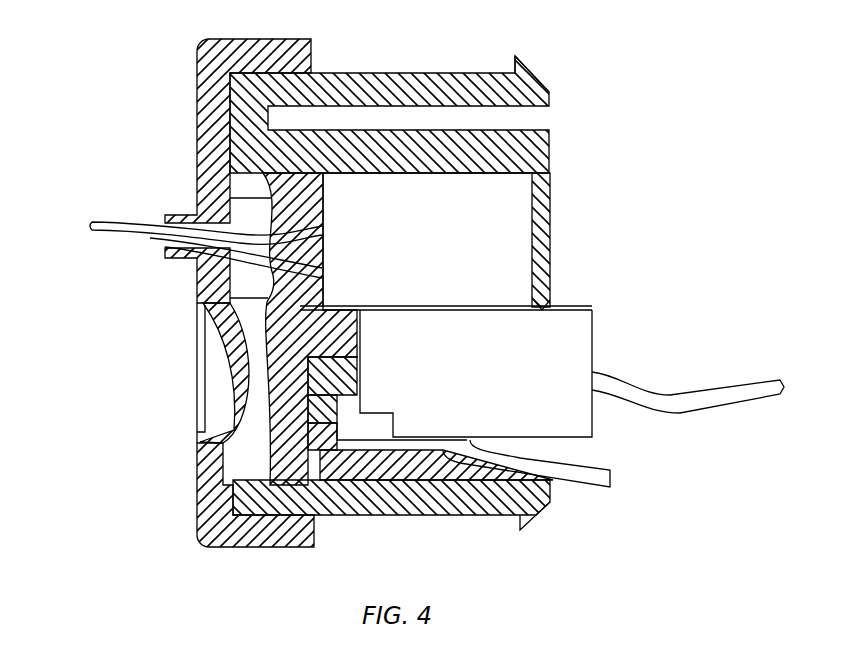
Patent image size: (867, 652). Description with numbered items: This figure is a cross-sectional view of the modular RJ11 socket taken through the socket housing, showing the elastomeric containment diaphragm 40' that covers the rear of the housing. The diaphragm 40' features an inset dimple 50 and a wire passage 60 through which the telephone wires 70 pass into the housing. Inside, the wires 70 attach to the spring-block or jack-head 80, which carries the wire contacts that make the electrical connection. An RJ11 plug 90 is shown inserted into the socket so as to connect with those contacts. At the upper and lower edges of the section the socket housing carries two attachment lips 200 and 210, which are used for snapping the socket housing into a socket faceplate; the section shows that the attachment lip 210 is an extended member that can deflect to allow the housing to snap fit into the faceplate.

The elastomeric containment diaphragm 40' is at (220, 293).
The inset dimple 50 is at (210, 377).
The wire passage 60 is at (165, 222).
The telephone wires 70 is at (95, 232).
The spring-block or jack-head 80 is at (517, 227).
The RJ11 plug 90 is at (592, 342).
The attachment lip 200 is at (548, 508).
The attachment lip 210 is at (520, 66).